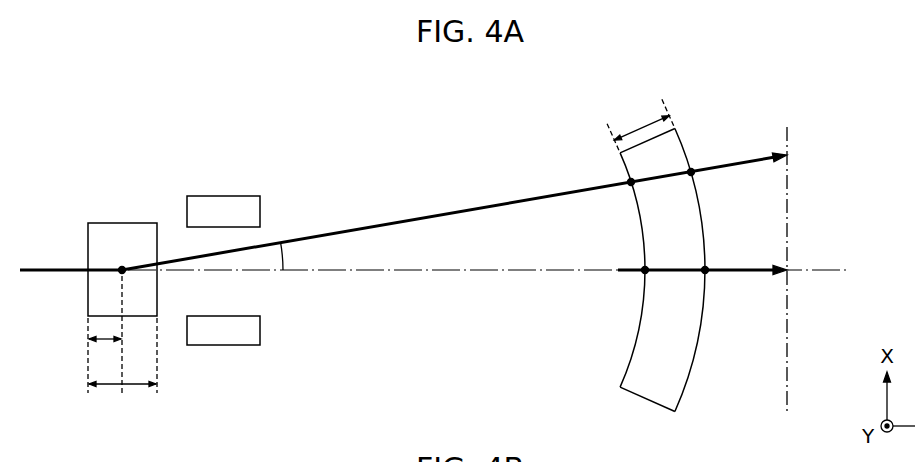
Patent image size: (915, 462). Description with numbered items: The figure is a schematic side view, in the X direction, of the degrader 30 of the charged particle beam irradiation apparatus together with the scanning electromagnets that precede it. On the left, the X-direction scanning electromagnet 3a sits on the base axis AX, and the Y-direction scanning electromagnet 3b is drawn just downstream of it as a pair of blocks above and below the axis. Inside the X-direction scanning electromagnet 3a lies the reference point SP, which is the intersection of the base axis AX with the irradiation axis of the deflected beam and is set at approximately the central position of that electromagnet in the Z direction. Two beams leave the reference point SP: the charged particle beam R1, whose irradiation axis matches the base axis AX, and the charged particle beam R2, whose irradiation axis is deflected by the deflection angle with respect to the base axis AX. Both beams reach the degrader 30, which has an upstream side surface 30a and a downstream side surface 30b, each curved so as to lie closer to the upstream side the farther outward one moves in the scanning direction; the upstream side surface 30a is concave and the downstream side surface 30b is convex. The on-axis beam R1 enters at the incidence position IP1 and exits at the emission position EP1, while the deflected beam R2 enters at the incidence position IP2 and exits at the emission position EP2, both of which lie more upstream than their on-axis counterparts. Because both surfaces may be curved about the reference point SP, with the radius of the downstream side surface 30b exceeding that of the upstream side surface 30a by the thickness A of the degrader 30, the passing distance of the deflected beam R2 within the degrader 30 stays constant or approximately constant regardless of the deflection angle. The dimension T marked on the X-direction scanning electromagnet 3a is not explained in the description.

The X-direction scanning electromagnet 3a is at (134, 221).
The Y-direction scanning electromagnet 3b is at (241, 192).
The degrader 30 is at (659, 296).
The upstream side surface 30a is at (635, 347).
The downstream side surface 30b is at (698, 360).
The reference point SP is at (122, 270).
The base axis AX is at (415, 276).
The charged particle beam R1 is at (738, 268).
The charged particle beam R2 is at (580, 190).
The incidence position IP1 is at (645, 273).
The incidence position IP2 is at (631, 186).
The emission position EP1 is at (707, 273).
The emission position EP2 is at (694, 176).
The thickness of the degrader A is at (640, 124).
The thickness of element 3a T is at (122, 395).